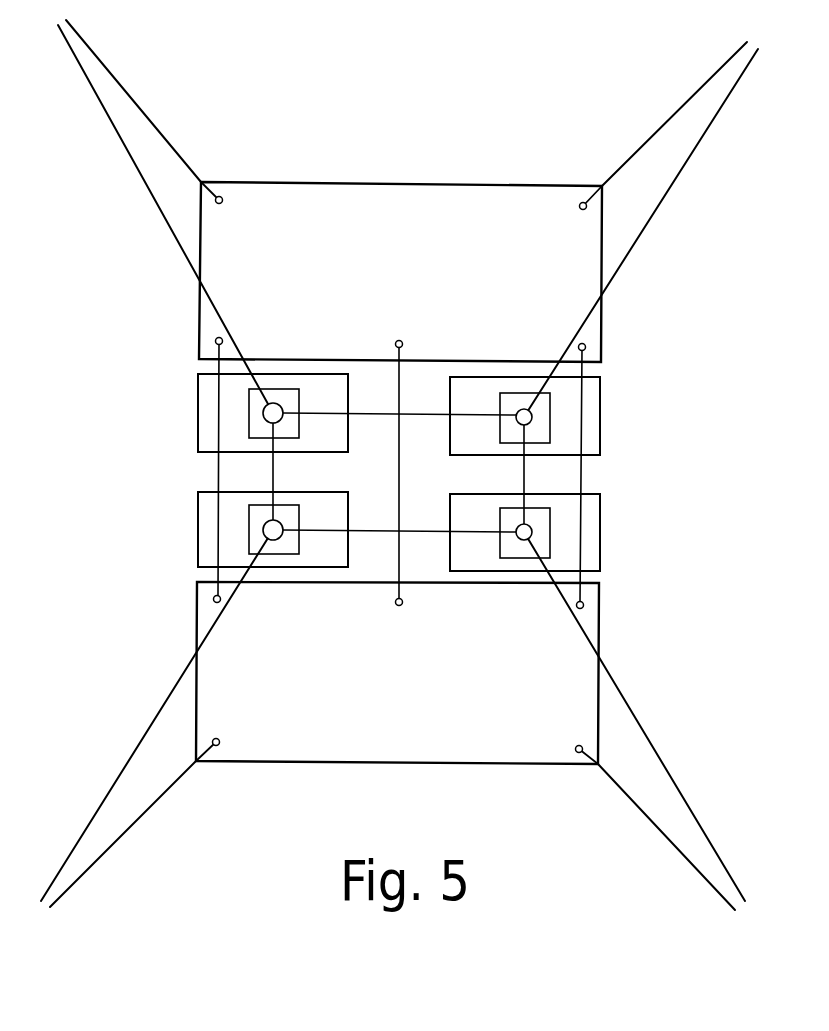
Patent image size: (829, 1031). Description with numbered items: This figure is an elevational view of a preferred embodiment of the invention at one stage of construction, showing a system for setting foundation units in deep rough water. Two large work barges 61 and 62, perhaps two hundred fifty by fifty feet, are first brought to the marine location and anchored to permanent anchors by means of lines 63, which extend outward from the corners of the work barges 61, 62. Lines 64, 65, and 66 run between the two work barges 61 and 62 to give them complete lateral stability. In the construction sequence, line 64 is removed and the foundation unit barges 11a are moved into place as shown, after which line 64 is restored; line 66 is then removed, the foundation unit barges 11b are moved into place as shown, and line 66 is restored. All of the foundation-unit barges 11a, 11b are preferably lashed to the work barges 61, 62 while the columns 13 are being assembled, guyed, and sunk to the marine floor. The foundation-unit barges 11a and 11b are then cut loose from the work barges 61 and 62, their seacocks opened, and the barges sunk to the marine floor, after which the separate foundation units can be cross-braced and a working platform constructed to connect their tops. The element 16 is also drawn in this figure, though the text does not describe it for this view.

The foundation unit barges 11a is at (207, 406).
The foundation unit barges 11b is at (593, 421).
The columns 13 is at (524, 417).
The wire 16 is at (141, 176).
The work barge 61 is at (429, 197).
The work barge 62 is at (401, 755).
The lines 63 is at (134, 98).
The line 64 is at (217, 470).
The line 65 is at (400, 481).
The line 66 is at (584, 482).